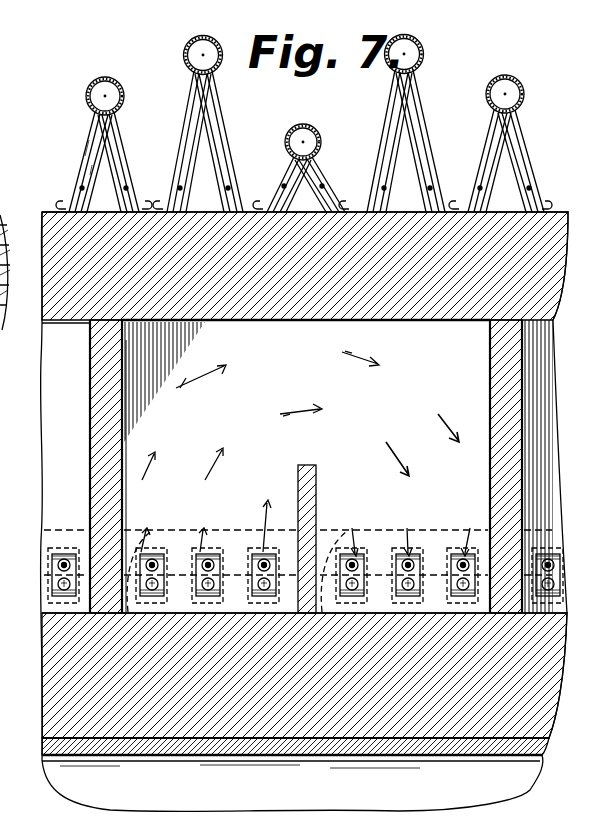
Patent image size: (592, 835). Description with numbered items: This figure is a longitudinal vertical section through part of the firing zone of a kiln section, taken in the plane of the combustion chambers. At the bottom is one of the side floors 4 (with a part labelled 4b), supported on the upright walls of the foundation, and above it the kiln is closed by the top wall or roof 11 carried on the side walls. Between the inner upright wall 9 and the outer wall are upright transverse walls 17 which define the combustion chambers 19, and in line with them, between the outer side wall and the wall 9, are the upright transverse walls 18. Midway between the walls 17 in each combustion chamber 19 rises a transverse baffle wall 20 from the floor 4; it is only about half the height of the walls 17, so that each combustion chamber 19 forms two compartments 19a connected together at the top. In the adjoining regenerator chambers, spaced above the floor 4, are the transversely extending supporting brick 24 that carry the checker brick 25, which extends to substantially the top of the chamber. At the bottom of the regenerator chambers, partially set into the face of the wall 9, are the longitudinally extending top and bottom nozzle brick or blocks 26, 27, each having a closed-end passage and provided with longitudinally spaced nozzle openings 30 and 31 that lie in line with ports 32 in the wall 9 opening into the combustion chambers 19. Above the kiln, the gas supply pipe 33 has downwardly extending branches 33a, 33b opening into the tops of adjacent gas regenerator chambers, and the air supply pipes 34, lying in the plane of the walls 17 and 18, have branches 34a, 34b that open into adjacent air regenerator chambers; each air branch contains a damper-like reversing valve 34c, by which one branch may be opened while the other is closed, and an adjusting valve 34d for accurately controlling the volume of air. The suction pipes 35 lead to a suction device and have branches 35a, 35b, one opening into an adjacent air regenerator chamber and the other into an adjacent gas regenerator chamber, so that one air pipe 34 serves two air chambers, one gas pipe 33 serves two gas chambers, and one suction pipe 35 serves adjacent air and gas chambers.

The side floor 4 is at (44, 660).
The casing portion 4b is at (10, 126).
The inner upright wall 9 is at (42, 478).
The top wall or roof 11 is at (60, 206).
The upright transverse wall 17 is at (108, 424).
The upright transverse wall 18 is at (0, 538).
The combustion chamber 19 is at (72, 366).
The compartment 19a is at (305, 502).
The transverse baffle wall 20 is at (301, 466).
The supporting brick 24 is at (0, 500).
The checker brick 25 is at (4, 318).
The top nozzle brick or block 26 is at (238, 547).
The bottom nozzle brick or block 27 is at (298, 531).
The nozzle opening 30 is at (210, 562).
The nozzle opening 31 is at (214, 584).
The port 32 is at (215, 560).
The gas supply pipe or duct 33 is at (303, 156).
The gas pipe branch 33a is at (320, 164).
The gas pipe branch 33b is at (288, 166).
The air supply pipe or duct 34 is at (310, 130).
The air pipe branch 34a is at (124, 136).
The air pipe branch 34b is at (93, 132).
The reversing valve 34c is at (21, 152).
The adjusting valve 34d is at (22, 176).
The suction pipe 35 is at (309, 121).
The suction pipe branch 35a is at (222, 120).
The suction pipe branch 35b is at (184, 106).